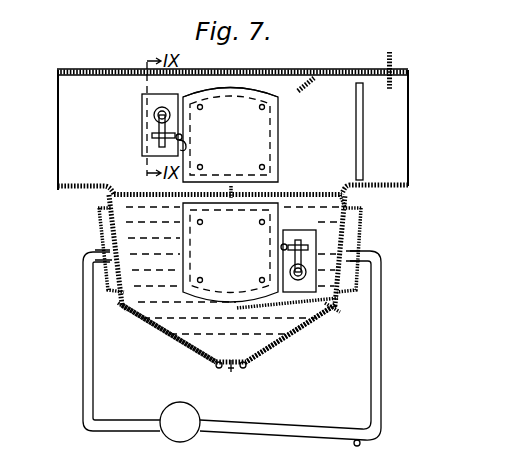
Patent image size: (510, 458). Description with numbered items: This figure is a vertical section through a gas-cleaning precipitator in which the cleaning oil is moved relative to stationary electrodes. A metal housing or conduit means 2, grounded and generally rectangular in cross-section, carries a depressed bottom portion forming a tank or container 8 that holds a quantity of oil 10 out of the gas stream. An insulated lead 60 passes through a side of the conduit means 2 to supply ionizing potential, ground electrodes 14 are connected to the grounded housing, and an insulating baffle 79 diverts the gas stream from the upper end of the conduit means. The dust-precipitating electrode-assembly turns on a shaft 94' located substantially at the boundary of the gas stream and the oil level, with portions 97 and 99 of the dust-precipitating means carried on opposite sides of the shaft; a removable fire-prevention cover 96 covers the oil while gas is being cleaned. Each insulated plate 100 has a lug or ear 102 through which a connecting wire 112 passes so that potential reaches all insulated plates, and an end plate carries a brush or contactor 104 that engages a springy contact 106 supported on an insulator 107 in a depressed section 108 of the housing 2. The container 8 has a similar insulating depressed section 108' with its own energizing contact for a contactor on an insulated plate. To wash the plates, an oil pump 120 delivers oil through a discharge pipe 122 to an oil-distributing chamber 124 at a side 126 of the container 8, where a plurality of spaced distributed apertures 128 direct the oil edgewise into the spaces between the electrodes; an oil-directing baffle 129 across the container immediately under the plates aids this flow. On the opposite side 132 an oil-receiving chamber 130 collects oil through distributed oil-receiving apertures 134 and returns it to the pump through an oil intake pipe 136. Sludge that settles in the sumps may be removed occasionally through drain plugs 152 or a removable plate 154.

The housing or conduit means 2 is at (205, 74).
The tank or container 8 is at (274, 340).
The oil 10 is at (190, 294).
The ground electrodes 14 is at (364, 118).
The insulated lead 60 is at (392, 63).
The insulating baffle 79 is at (311, 87).
The shaft 94' is at (230, 244).
The fire-prevention cover 96 is at (147, 188).
The portion of the dust-precipitating means 97 is at (234, 93).
The portion of the dust-precipitating means 99 is at (226, 288).
The insulated plate 100 is at (278, 121).
The lug or ear 102 is at (187, 148).
The brush or contactor 104 is at (160, 138).
The springy contact 106 is at (158, 127).
The insulator 107 is at (186, 90).
The depressed section 108 is at (138, 122).
The insulating depressed section 108' is at (279, 233).
The connecting wire 112 is at (182, 135).
The oil pump 120 is at (200, 416).
The discharge pipe 122 is at (381, 288).
The oil-distributing chamber 124 is at (358, 222).
The side of the oil container 126 is at (347, 203).
The distributed apertures 128 is at (355, 241).
The oil-directing baffle 129 is at (326, 306).
The oil-receiving chamber 130 is at (95, 250).
The side of the container 132 is at (120, 306).
The oil-receiving apertures 134 is at (100, 227).
The oil intake pipe 136 is at (83, 298).
The drain plugs 152 is at (234, 368).
The removable plate 154 is at (223, 366).